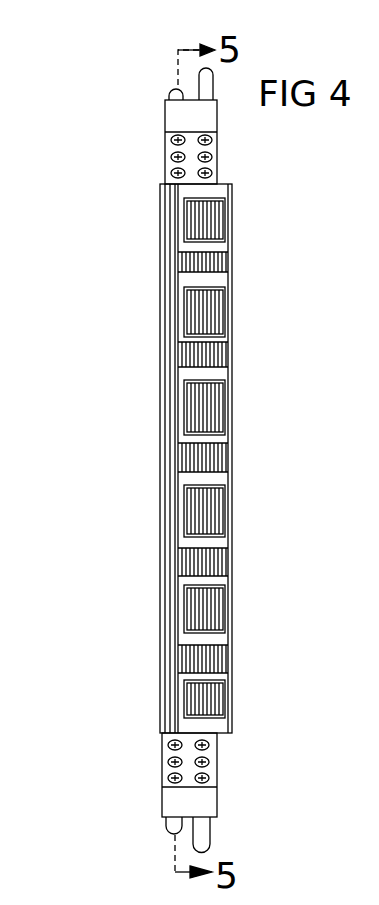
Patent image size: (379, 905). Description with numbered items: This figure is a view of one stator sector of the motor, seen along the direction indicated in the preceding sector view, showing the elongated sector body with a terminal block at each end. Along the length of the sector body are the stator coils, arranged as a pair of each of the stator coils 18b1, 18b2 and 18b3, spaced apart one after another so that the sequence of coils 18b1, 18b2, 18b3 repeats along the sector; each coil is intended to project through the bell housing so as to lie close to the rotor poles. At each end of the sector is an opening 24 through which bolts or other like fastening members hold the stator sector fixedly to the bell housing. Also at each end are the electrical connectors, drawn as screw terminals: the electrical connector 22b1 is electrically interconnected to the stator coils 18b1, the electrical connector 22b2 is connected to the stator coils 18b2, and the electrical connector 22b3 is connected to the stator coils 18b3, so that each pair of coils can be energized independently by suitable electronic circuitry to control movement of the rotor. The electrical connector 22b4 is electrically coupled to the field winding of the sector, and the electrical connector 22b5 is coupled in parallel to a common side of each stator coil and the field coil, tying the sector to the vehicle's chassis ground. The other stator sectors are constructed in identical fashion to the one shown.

The opening 24 is at (165, 140).
The electrical connector 22b1 is at (212, 142).
The electrical connector 22b2 is at (212, 157).
The electrical connector 22b3 is at (212, 175).
The electrical connector 22b4 is at (168, 762).
The electrical connector 22b5 is at (168, 745).
The stator coil 18b1 is at (195, 503).
The stator coil 18b2 is at (198, 603).
The stator coil 18b3 is at (190, 697).